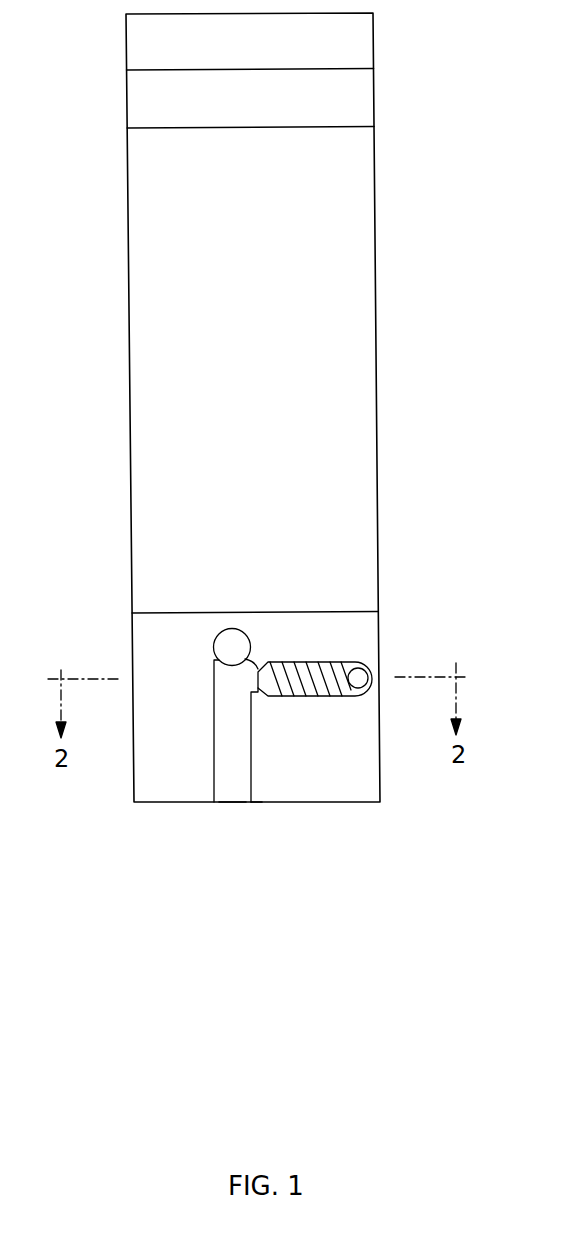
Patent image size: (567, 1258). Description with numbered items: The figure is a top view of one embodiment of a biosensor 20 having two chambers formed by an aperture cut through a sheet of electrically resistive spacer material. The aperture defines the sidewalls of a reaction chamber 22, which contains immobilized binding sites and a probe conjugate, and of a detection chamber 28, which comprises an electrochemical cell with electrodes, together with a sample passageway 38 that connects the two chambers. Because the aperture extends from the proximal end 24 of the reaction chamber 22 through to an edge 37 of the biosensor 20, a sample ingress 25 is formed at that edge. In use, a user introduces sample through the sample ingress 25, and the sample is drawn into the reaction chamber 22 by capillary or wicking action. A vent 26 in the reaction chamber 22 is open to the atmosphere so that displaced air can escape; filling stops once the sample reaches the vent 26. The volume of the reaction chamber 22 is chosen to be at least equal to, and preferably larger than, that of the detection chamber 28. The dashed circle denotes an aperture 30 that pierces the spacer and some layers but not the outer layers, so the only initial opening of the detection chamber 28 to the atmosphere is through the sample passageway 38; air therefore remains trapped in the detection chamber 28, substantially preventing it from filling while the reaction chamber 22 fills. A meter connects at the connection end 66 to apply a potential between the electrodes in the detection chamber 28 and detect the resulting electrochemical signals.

The biosensor 20 is at (243, 305).
The connection end 66 is at (138, 38).
The edge of sensor 37 is at (325, 803).
The reaction chamber 22 is at (230, 748).
The vent 26 is at (222, 645).
The sample passageway 38 is at (253, 678).
The detection chamber 28 is at (312, 665).
The aperture 30 is at (360, 677).
The proximal end of reaction chamber 24 is at (222, 835).
The sample ingress 25 is at (242, 803).